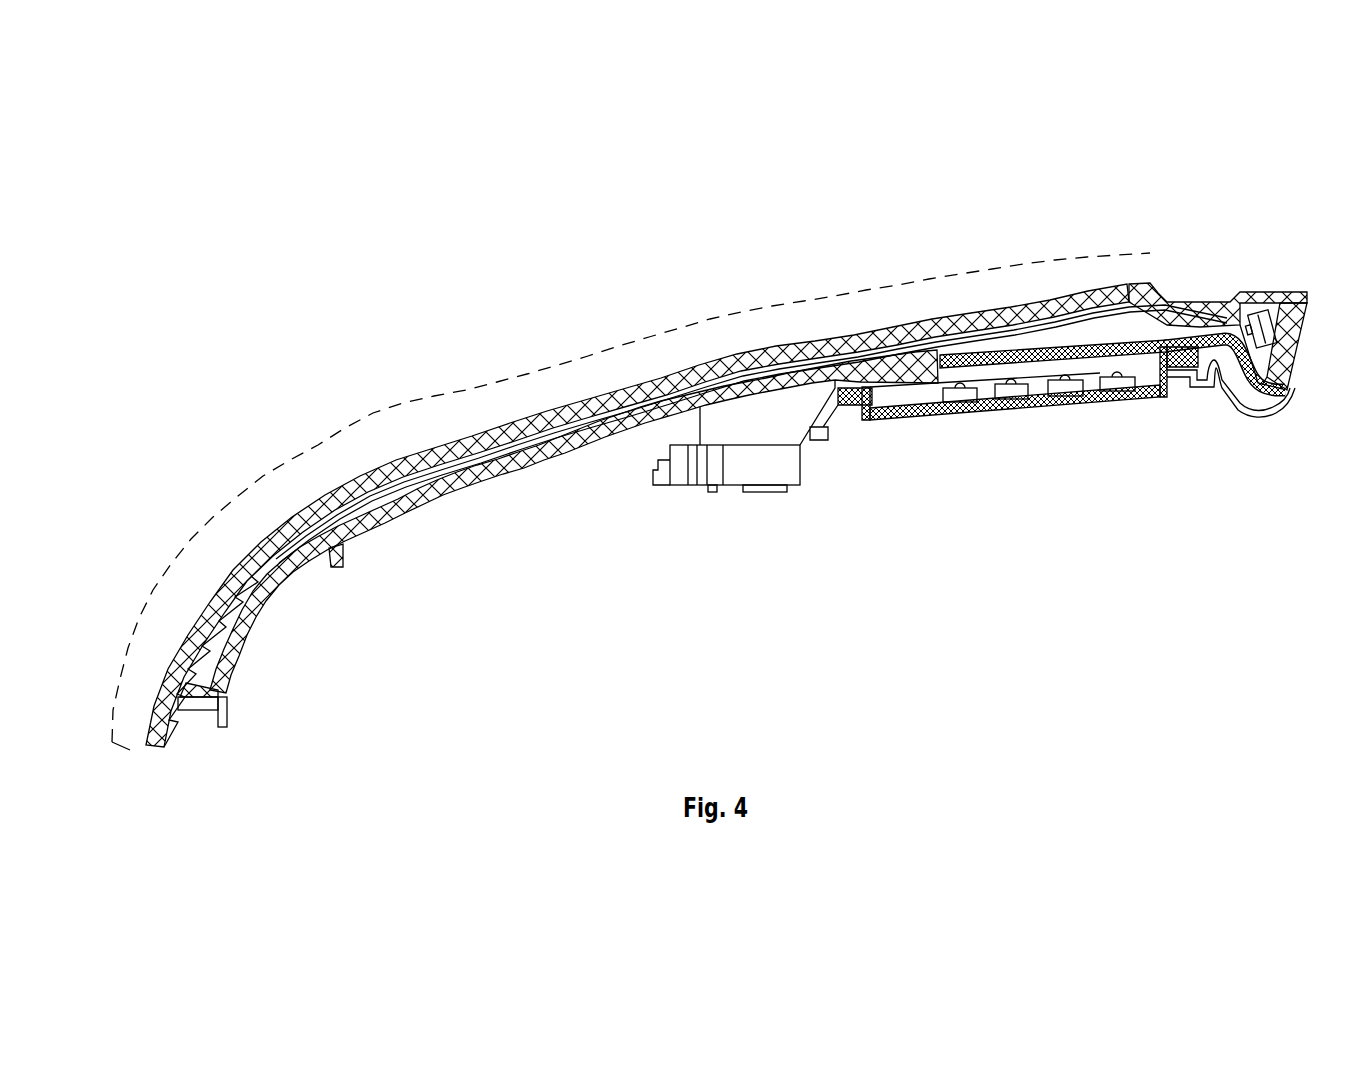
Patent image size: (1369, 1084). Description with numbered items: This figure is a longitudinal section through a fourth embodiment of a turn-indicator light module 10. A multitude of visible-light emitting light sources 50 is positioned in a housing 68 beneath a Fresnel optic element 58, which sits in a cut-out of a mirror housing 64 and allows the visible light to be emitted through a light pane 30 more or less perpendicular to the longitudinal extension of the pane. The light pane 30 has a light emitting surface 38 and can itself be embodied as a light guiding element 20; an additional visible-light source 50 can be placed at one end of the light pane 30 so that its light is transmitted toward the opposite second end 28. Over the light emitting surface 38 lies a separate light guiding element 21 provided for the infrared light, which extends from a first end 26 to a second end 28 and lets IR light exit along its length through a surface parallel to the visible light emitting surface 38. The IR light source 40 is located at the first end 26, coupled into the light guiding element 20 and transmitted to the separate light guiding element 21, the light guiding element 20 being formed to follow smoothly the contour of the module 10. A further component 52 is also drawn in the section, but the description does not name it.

The turn-indicator light module 10 is at (348, 291).
The light guiding element 20 is at (442, 452).
The separate light guiding element 21 is at (590, 345).
The first end 26 is at (1202, 285).
The second end 28 is at (138, 775).
The light pane 30 is at (527, 423).
The light emitting surface 38 is at (645, 375).
The IR light emitting light source 40 is at (1268, 330).
The visible-light emitting light sources 50 is at (958, 404).
The circuit board channel 52 is at (1160, 425).
The Fresnel optic element 58 is at (1028, 352).
The mirror housing 64 is at (488, 480).
The housing 68 is at (912, 432).